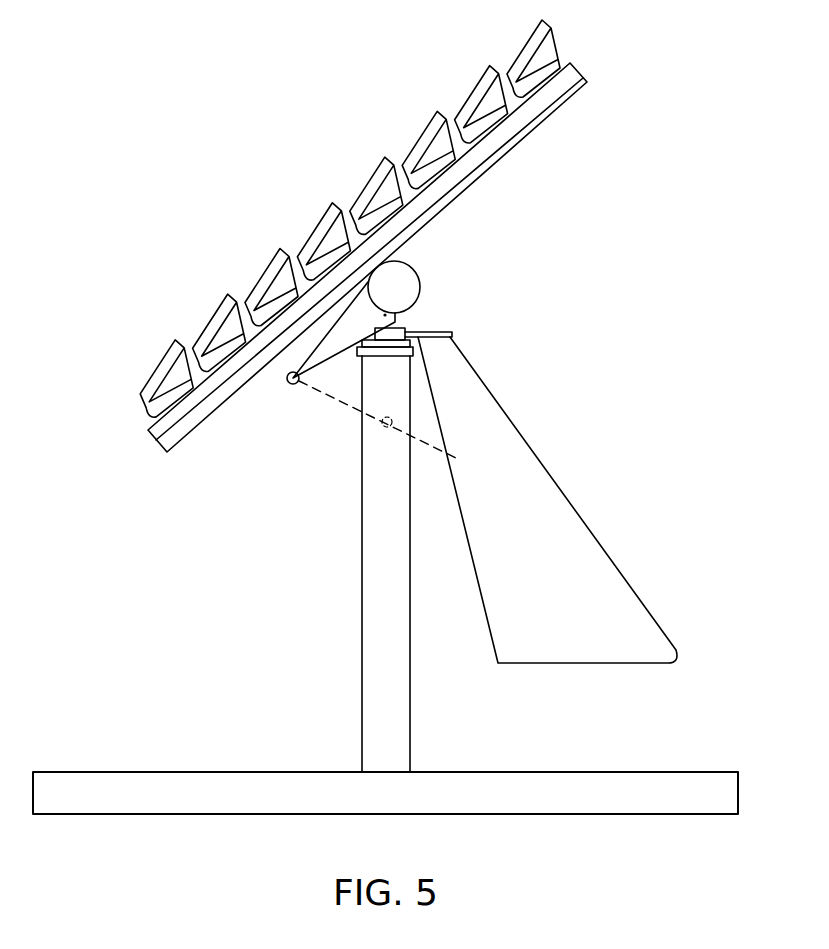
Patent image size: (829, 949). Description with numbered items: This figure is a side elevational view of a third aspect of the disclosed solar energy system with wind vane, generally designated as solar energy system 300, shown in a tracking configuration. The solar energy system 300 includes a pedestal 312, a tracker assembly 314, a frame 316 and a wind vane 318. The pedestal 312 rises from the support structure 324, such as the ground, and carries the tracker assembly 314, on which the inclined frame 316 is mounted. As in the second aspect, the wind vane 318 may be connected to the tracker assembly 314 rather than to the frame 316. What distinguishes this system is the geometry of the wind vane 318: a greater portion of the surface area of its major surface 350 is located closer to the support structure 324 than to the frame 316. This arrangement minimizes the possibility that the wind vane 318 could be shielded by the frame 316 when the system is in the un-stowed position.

The solar energy system 300 is at (712, 127).
The pedestal 312 is at (410, 684).
The tracker assembly 314 is at (447, 272).
The frame 316 is at (572, 63).
The wind vane 318 is at (612, 552).
The support structure 324 is at (586, 771).
The major surface 350 is at (555, 562).